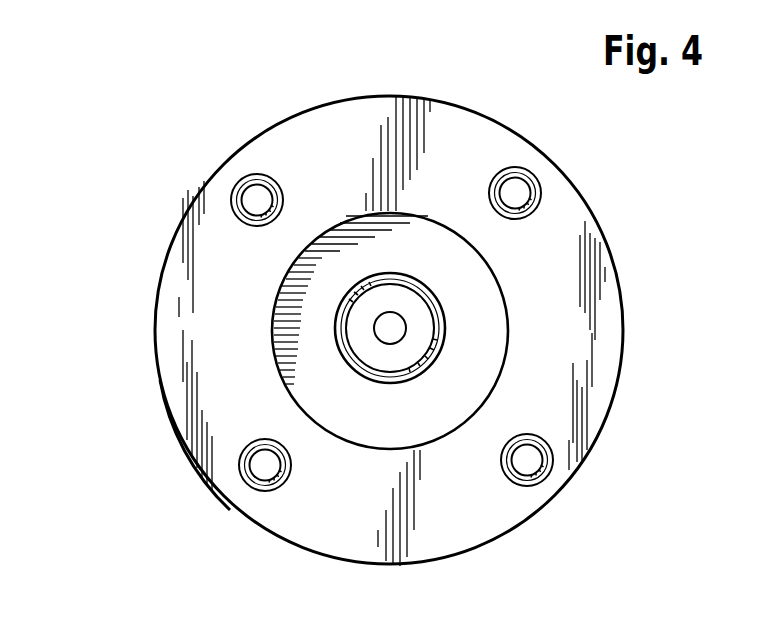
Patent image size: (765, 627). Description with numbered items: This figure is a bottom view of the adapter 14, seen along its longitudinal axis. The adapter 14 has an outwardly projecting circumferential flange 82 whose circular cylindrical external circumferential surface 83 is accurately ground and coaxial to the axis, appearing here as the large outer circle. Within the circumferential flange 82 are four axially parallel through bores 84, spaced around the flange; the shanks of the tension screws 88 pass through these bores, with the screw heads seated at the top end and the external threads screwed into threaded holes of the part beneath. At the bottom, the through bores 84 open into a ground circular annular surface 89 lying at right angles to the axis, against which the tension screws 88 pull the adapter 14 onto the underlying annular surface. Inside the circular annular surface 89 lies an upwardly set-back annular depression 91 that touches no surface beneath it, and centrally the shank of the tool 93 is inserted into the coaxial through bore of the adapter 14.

The adapter 14 is at (140, 242).
The circumferential flange 82 is at (159, 384).
The external circumferential surface 83 is at (220, 496).
The through bores 84 is at (256, 175).
The tension screws 88 is at (250, 195).
The circular annular surface 89 is at (470, 140).
The annular depression 91 is at (478, 299).
The tool 93 is at (373, 352).